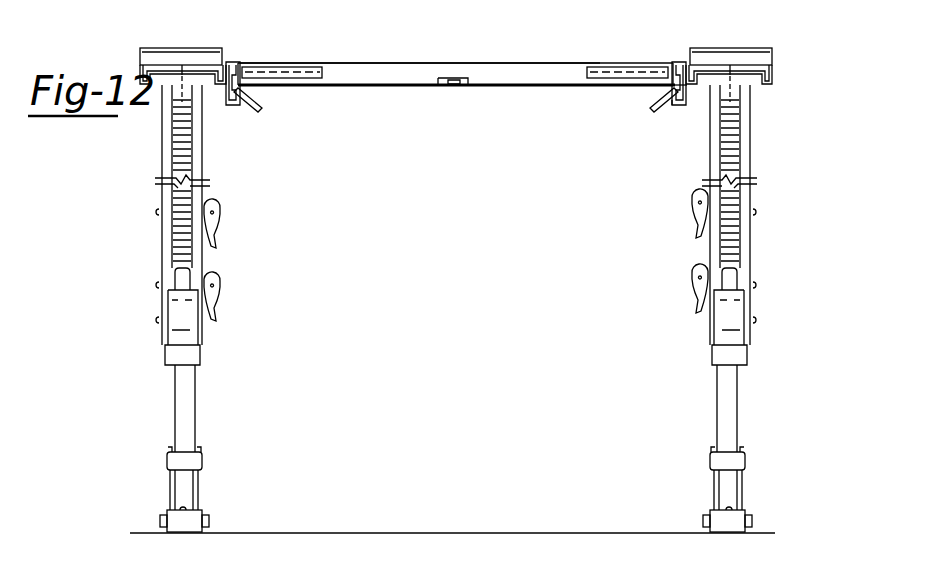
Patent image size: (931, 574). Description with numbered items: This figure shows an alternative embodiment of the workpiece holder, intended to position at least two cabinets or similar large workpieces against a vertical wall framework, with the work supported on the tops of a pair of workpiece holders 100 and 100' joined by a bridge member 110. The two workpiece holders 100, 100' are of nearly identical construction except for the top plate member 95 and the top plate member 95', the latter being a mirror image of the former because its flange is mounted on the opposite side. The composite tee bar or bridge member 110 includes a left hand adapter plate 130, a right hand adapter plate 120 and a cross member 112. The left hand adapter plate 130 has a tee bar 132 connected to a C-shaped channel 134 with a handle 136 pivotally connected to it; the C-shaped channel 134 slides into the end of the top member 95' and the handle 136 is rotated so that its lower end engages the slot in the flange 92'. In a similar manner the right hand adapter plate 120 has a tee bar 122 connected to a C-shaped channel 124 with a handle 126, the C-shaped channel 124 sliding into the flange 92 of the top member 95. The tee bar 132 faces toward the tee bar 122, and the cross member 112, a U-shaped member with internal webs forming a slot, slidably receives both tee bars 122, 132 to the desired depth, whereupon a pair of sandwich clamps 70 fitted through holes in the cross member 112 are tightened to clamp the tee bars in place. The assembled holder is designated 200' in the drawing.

The bridge member 110 is at (563, 58).
The cross member 112 is at (508, 86).
The right hand adapter plate 120 is at (668, 112).
The tee bar 122 is at (643, 67).
The C-shaped channel 124 is at (668, 116).
The handle 126 is at (648, 110).
The left hand adapter plate 130 is at (240, 56).
The tee bar 132 is at (303, 66).
The C-shaped channel 134 is at (237, 106).
The handle 136 is at (262, 110).
The flange 92 is at (680, 114).
The flange 92' is at (228, 121).
The top plate member 95 is at (751, 90).
The top plate member 95' is at (241, 114).
The sandwich clamps 70 is at (229, 240).
The workpiece holder 100 is at (682, 308).
The workpiece holder 100' is at (232, 308).
The opening / bay 200' is at (434, 300).